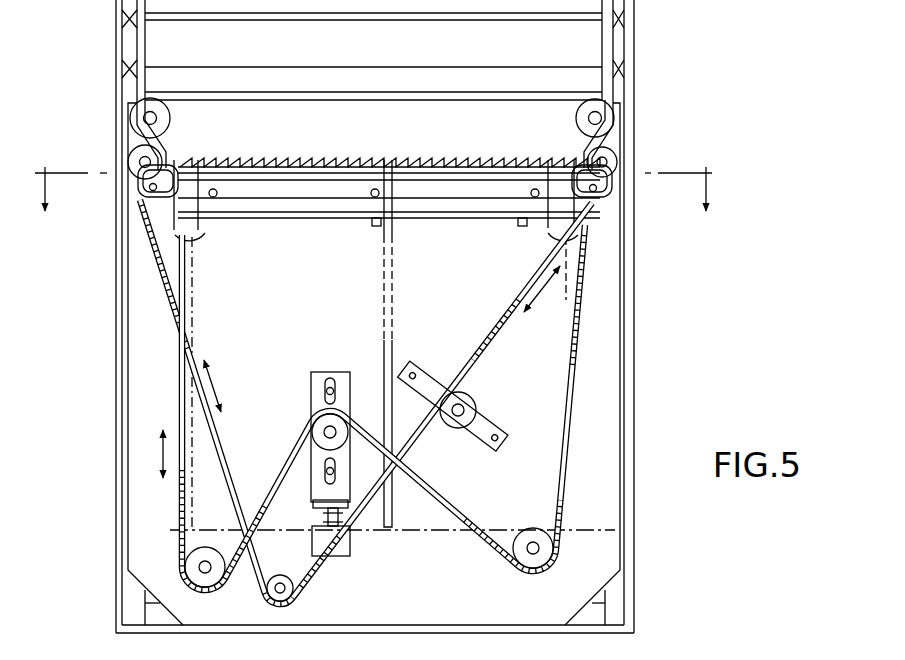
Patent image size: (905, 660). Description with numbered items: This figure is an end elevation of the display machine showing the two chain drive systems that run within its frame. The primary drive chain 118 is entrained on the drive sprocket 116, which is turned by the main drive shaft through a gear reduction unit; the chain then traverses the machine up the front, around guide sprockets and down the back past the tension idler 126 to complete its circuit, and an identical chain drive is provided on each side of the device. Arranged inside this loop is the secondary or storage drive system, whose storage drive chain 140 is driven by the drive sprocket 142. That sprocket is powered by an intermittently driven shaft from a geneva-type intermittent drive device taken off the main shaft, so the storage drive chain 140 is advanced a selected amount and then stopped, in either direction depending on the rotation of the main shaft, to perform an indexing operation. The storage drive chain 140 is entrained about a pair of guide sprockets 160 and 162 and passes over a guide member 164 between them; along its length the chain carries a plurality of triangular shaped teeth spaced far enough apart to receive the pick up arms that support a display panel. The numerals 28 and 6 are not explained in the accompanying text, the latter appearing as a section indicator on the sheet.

The frame post 28 is at (128, 48).
The section line 6- 6 is at (374, 205).
The drive sprocket 116 is at (523, 555).
The primary drive chain 118 is at (178, 540).
The tension idler 126 is at (313, 418).
The storage drive chain 140 is at (317, 170).
The drive sprocket 142 is at (293, 583).
The guide sprocket 160 is at (147, 197).
The guide sprocket 162 is at (604, 202).
The guide member 164 is at (292, 190).